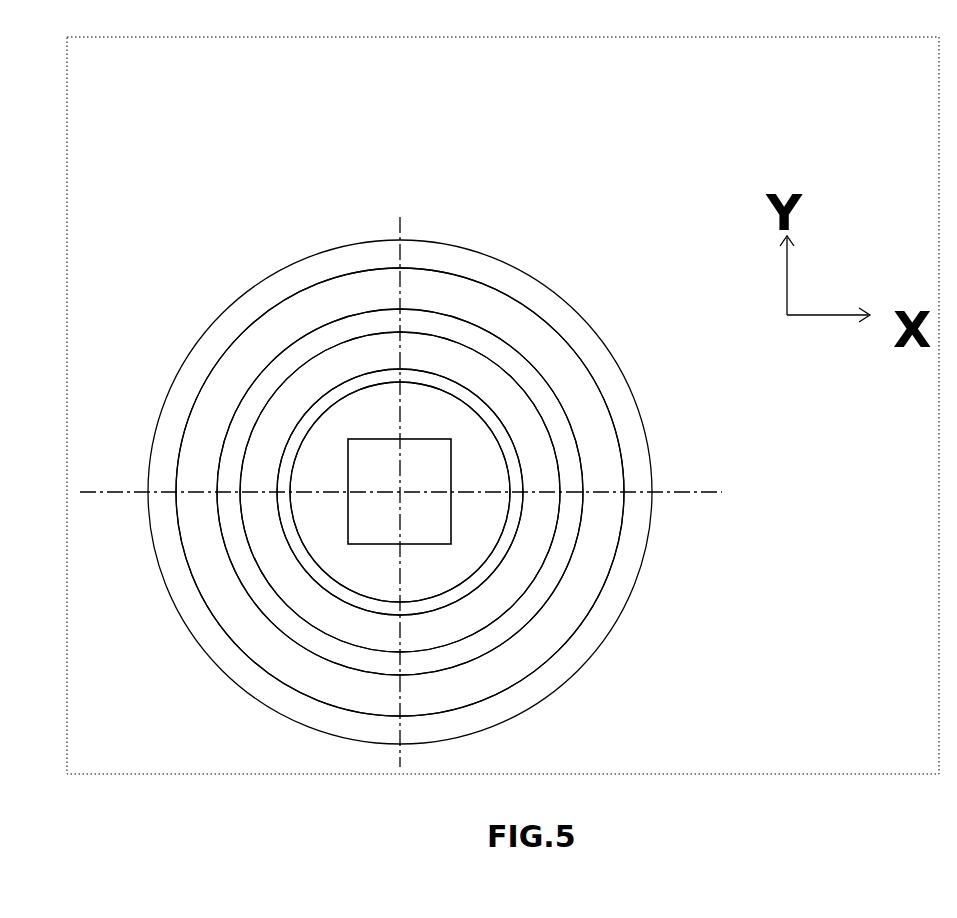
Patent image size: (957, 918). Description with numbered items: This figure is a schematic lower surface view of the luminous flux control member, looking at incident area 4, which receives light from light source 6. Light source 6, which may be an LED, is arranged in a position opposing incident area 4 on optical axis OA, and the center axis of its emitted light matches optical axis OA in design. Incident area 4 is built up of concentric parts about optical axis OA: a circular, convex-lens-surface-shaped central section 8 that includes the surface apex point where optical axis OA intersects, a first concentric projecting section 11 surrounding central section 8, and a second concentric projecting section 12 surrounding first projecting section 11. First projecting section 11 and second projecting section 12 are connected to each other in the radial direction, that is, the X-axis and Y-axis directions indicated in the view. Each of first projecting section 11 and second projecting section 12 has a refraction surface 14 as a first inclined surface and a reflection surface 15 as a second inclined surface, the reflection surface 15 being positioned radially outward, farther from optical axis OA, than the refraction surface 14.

The incident area 4 is at (576, 115).
The first projecting section 11 is at (252, 183).
The second projecting section 12 is at (465, 183).
The refraction surface 14 is at (318, 398).
The reflection surface 15 is at (327, 377).
The central section 8 is at (432, 410).
The light source 6 is at (348, 475).
The optical axis OA is at (400, 492).